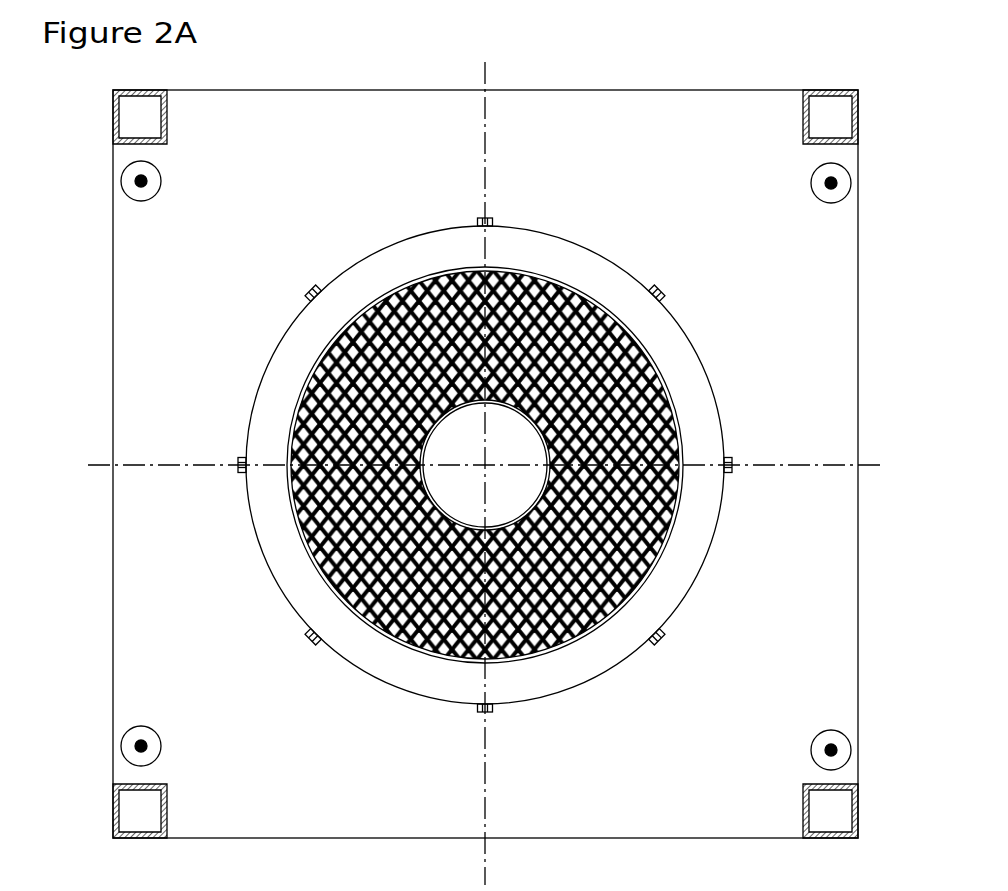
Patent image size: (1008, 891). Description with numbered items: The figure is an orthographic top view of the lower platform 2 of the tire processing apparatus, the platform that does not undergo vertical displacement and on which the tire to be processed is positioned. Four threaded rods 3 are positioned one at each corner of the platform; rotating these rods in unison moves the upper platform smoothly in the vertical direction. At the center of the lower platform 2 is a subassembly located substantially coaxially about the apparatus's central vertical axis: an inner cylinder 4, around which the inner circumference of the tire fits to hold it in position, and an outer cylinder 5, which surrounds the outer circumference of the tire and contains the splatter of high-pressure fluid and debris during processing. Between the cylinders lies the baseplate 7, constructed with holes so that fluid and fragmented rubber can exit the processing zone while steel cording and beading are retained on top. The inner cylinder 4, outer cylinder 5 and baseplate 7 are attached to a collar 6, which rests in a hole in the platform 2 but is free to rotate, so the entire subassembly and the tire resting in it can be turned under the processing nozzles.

The lower platform 2 is at (533, 113).
The threaded rods 3 is at (141, 180).
The inner cylinder 4 is at (462, 438).
The outer cylinder 5 is at (675, 398).
The collar 6 is at (703, 555).
The baseplate 7 is at (298, 397).